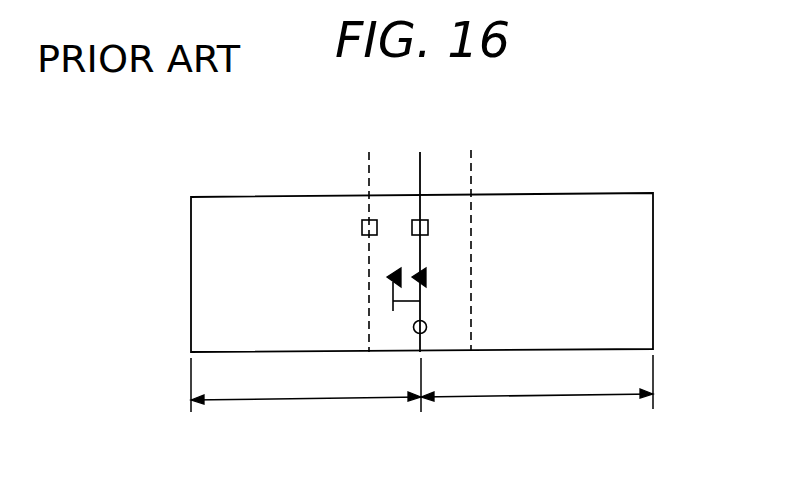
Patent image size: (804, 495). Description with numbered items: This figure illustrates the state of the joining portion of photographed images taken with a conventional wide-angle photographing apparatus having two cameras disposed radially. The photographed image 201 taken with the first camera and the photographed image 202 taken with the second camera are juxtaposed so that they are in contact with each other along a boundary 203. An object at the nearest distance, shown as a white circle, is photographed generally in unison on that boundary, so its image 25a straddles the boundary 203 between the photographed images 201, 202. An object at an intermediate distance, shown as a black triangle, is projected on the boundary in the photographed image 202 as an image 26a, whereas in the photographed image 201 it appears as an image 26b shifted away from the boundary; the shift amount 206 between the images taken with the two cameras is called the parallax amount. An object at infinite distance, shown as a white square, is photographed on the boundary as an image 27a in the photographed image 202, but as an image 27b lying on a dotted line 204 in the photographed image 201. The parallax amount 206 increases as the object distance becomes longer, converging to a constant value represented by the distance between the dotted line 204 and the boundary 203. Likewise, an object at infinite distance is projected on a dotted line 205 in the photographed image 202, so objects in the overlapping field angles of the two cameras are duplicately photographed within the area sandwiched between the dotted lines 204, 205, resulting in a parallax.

The photographed image 201 is at (298, 402).
The photographed image 202 is at (536, 398).
The boundary 203 is at (419, 150).
The dotted line 204 is at (369, 152).
The dotted line 205 is at (471, 150).
The shift amount 206 is at (406, 302).
The image of object 25a is at (427, 327).
The image of object 26a is at (426, 277).
The image of object 26b is at (388, 279).
The image of object 27a is at (428, 228).
The image of object 27b is at (362, 228).